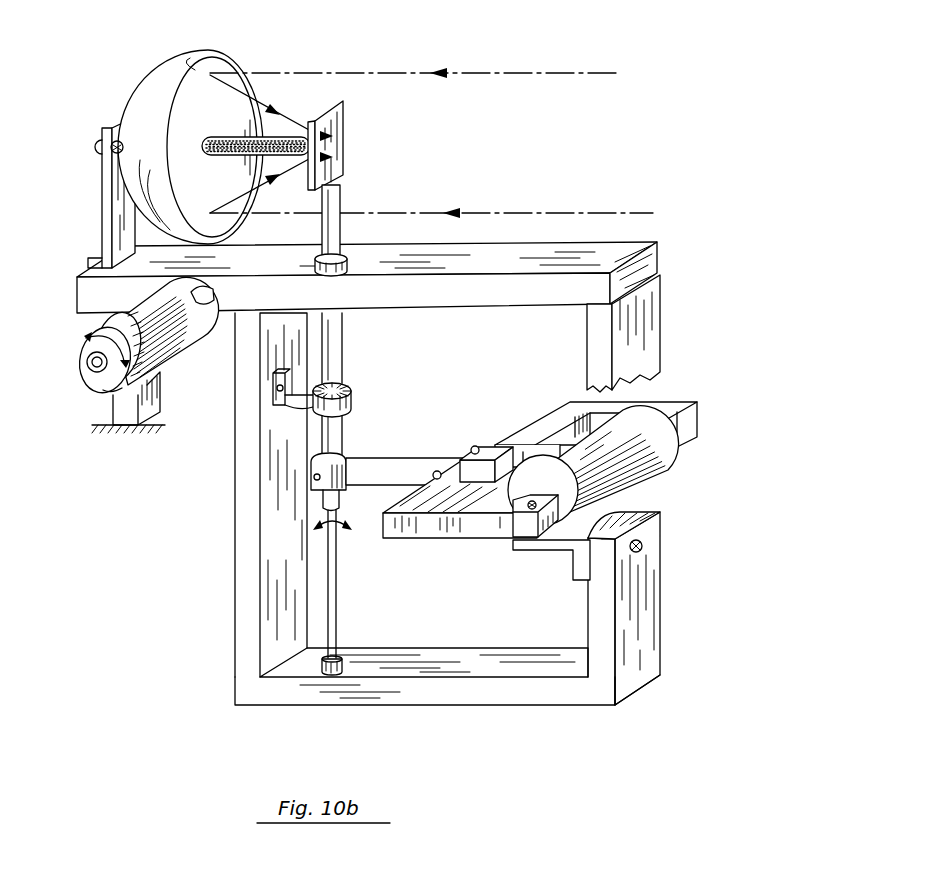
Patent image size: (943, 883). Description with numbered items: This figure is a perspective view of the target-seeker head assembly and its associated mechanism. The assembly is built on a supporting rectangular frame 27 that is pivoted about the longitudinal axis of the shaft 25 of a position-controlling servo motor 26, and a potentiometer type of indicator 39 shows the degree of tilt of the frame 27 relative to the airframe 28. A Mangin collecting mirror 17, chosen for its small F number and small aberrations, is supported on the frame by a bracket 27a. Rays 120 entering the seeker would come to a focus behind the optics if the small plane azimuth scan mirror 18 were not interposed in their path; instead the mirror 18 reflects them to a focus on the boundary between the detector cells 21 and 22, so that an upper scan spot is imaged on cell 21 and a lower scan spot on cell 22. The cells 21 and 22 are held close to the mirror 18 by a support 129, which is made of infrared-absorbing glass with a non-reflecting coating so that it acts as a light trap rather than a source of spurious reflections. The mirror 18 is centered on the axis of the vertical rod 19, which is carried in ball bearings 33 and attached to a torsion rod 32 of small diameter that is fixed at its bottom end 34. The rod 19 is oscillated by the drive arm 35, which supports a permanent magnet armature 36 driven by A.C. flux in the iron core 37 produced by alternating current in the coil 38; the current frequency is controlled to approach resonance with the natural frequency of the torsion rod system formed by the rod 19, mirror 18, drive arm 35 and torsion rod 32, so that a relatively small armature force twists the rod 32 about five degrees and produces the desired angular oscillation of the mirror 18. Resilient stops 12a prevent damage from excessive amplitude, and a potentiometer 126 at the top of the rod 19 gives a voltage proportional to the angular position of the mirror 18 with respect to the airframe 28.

The Mangin collecting mirror 17 is at (206, 52).
The bracket 27a is at (102, 172).
The support 129 is at (234, 137).
The detector cell 21 is at (308, 128).
The detector cell 22 is at (298, 162).
The azimuth scan mirror 18 is at (340, 112).
The rod 19 is at (342, 198).
The rays 120 is at (583, 73).
The ball bearings 33 is at (345, 262).
The supporting rectangular frame 27 is at (623, 250).
The shaft 25 is at (207, 306).
The position-controlling servo motor 26 is at (175, 350).
The potentiometer type of indicator 39 is at (112, 388).
The airframe 28 is at (160, 394).
The potentiometer 126 is at (347, 393).
The resilient stops 12a is at (473, 446).
The drive arm 35 is at (413, 477).
The permanent magnet armature 36 is at (492, 458).
The iron core 37 is at (565, 402).
The coil 38 is at (643, 413).
The torsion rod 32 is at (338, 594).
The bottom end 34 is at (330, 706).